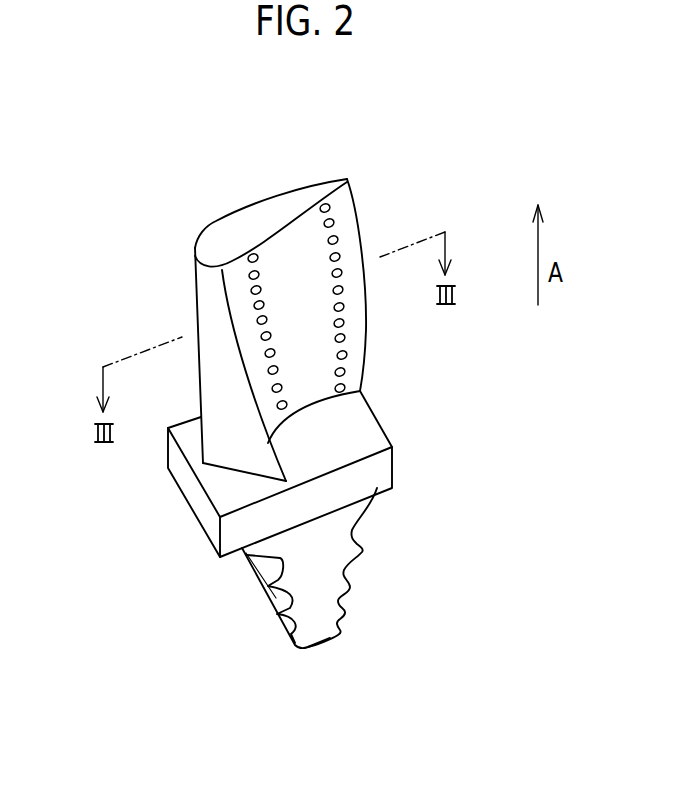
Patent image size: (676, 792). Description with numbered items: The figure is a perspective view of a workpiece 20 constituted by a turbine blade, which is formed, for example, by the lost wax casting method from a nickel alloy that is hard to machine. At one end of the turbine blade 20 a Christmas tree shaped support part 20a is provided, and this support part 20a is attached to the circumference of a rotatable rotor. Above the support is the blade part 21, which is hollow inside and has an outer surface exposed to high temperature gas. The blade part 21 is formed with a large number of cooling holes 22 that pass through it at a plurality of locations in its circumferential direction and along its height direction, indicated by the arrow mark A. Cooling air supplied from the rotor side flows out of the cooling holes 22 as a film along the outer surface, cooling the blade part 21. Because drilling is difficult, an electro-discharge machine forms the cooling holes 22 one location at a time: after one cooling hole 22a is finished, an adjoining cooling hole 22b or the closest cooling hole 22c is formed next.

The workpiece 20 is at (297, 357).
The support part 20a is at (363, 550).
The blade part 21 is at (297, 329).
The cooling holes 22 is at (254, 254).
The cooling hole 22a is at (279, 408).
The cooling hole 22b is at (273, 391).
The cooling hole 22c is at (344, 388).